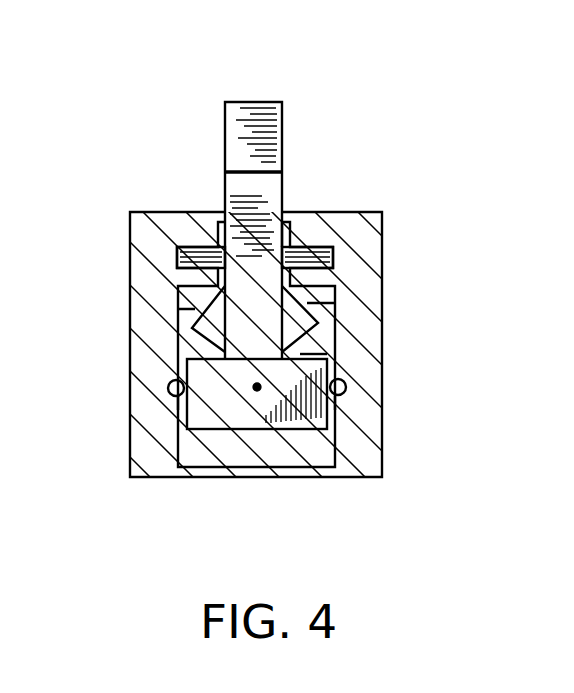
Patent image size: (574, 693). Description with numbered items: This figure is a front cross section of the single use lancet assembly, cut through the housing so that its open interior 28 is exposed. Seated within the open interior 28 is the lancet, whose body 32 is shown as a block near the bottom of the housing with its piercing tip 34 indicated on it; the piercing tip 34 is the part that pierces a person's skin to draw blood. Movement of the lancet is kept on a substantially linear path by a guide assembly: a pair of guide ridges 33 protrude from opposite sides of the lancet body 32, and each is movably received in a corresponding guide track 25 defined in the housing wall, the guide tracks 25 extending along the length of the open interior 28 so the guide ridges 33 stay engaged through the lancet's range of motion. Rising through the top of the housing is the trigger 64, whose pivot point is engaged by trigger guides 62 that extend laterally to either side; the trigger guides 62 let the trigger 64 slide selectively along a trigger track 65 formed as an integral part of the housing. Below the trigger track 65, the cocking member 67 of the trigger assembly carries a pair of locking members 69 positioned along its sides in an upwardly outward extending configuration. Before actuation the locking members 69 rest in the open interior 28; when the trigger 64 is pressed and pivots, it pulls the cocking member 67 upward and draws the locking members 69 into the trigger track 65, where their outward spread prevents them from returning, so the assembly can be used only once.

The guide track 25 is at (176, 403).
The open interior 28 is at (178, 305).
The body 32 is at (250, 430).
The guide ridge 33 is at (169, 389).
The piercing tip 34 is at (255, 391).
The trigger guide 62 is at (333, 252).
The trigger 64 is at (282, 114).
The trigger track 65 is at (306, 244).
The cocking member 67 is at (308, 354).
The locking members 69 is at (178, 312).